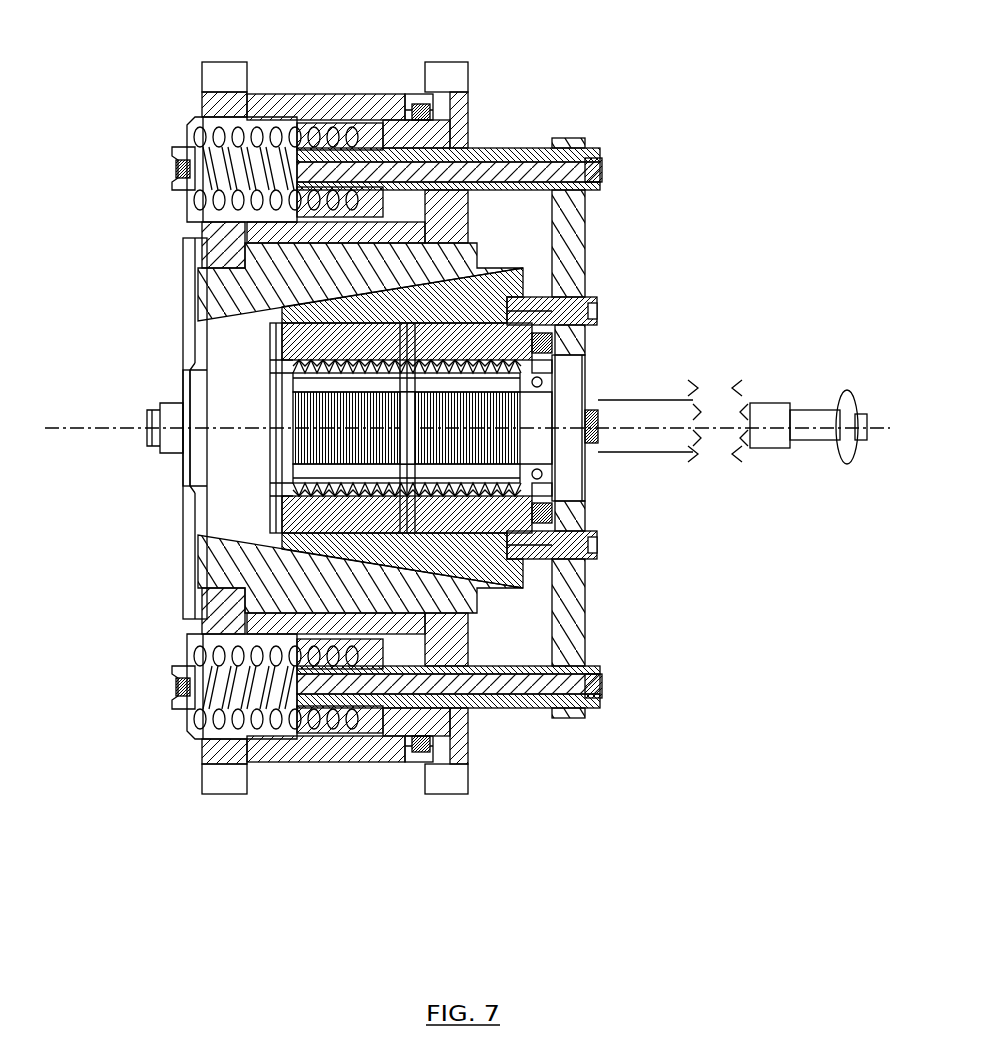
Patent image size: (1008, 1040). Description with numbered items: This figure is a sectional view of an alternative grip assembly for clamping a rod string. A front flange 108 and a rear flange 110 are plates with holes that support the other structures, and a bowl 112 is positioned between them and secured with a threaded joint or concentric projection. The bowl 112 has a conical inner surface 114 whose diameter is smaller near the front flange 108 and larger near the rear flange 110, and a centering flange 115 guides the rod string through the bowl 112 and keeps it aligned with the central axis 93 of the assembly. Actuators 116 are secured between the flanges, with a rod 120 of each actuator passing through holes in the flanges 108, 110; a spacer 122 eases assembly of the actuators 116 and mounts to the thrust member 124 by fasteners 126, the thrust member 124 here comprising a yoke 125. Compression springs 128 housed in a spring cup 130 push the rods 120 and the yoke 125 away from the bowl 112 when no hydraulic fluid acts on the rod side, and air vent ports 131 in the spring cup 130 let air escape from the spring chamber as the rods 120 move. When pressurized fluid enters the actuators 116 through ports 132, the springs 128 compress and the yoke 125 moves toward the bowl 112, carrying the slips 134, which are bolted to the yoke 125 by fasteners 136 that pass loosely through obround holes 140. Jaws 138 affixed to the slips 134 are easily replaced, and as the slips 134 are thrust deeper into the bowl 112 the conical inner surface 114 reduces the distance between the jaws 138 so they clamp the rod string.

The central axis 93 is at (122, 420).
The front flange 108 is at (205, 752).
The rear flange 110 is at (470, 762).
The bowl 112 is at (200, 562).
The conical inner surface 114 is at (196, 488).
The centering flange 115 is at (190, 532).
The actuator 116 is at (322, 96).
The rod 120 is at (490, 149).
The spacer 122 is at (530, 149).
The thrust member 124 is at (588, 148).
The yoke 125 is at (585, 258).
The fastener 126 is at (602, 168).
The compression spring 128 is at (200, 200).
The spring cup 130 is at (190, 118).
The air vent port 131 is at (178, 166).
The port 132 is at (425, 100).
The slip 134 is at (540, 262).
The fastener 136 is at (597, 300).
The jaw 138 is at (495, 420).
The obround hole 140 is at (587, 335).